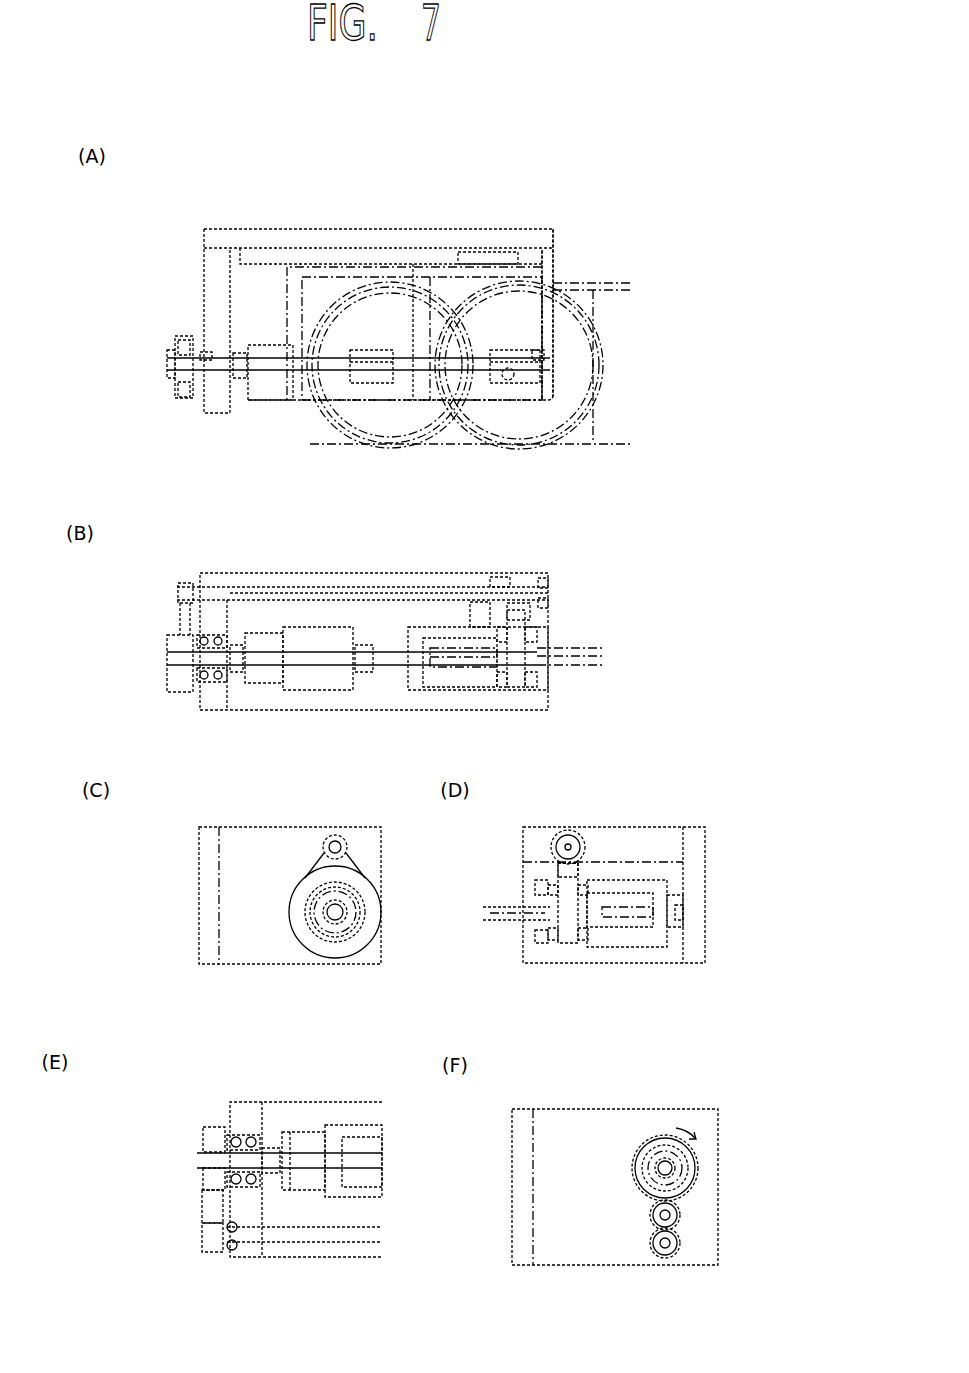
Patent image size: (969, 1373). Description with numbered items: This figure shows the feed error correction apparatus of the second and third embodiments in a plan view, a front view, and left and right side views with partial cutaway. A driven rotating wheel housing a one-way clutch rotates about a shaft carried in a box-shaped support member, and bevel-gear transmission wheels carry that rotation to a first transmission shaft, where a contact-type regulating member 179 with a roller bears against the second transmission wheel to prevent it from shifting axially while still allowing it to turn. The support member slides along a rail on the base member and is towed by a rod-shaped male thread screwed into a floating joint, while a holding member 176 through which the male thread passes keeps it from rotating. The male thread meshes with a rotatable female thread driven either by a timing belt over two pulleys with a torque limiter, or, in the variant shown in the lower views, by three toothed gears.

The holding member 176 is at (395, 405).
The regulating member 179 is at (470, 625).